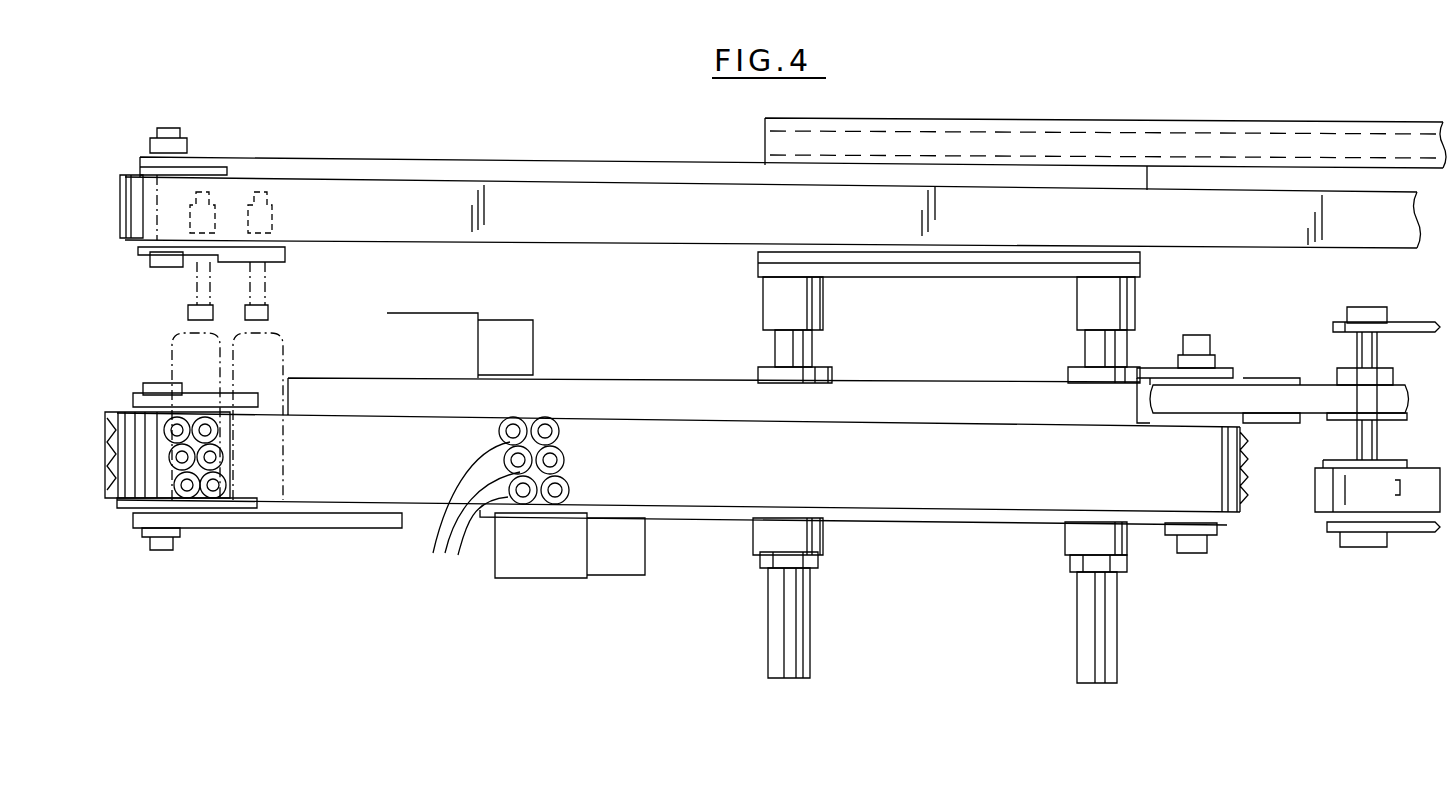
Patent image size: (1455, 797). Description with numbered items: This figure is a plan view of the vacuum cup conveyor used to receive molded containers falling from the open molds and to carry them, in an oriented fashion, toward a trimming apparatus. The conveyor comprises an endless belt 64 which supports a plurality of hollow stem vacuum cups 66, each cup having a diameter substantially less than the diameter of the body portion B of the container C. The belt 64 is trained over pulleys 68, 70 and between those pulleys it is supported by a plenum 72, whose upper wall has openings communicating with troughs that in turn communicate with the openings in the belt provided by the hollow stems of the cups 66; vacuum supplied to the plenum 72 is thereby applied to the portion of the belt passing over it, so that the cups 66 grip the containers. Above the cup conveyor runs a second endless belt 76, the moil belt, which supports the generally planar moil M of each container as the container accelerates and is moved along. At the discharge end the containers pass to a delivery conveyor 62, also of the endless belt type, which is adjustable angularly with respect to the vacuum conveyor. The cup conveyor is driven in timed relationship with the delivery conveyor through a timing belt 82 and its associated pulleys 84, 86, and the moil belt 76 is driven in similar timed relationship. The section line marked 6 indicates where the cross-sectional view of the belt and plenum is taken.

The section line 6- 6 is at (260, 163).
The delivery conveyor 62 is at (1397, 546).
The endless belt 64 is at (665, 418).
The hollow stem vacuum cups 66 is at (113, 410).
The pulley 68 is at (125, 517).
The pulley 70 is at (1233, 520).
The plenum 72 is at (373, 440).
The endless belt 76 is at (425, 228).
The timing belt 82 is at (1310, 395).
The pulley 84 is at (1152, 380).
The pulley 86 is at (1383, 378).